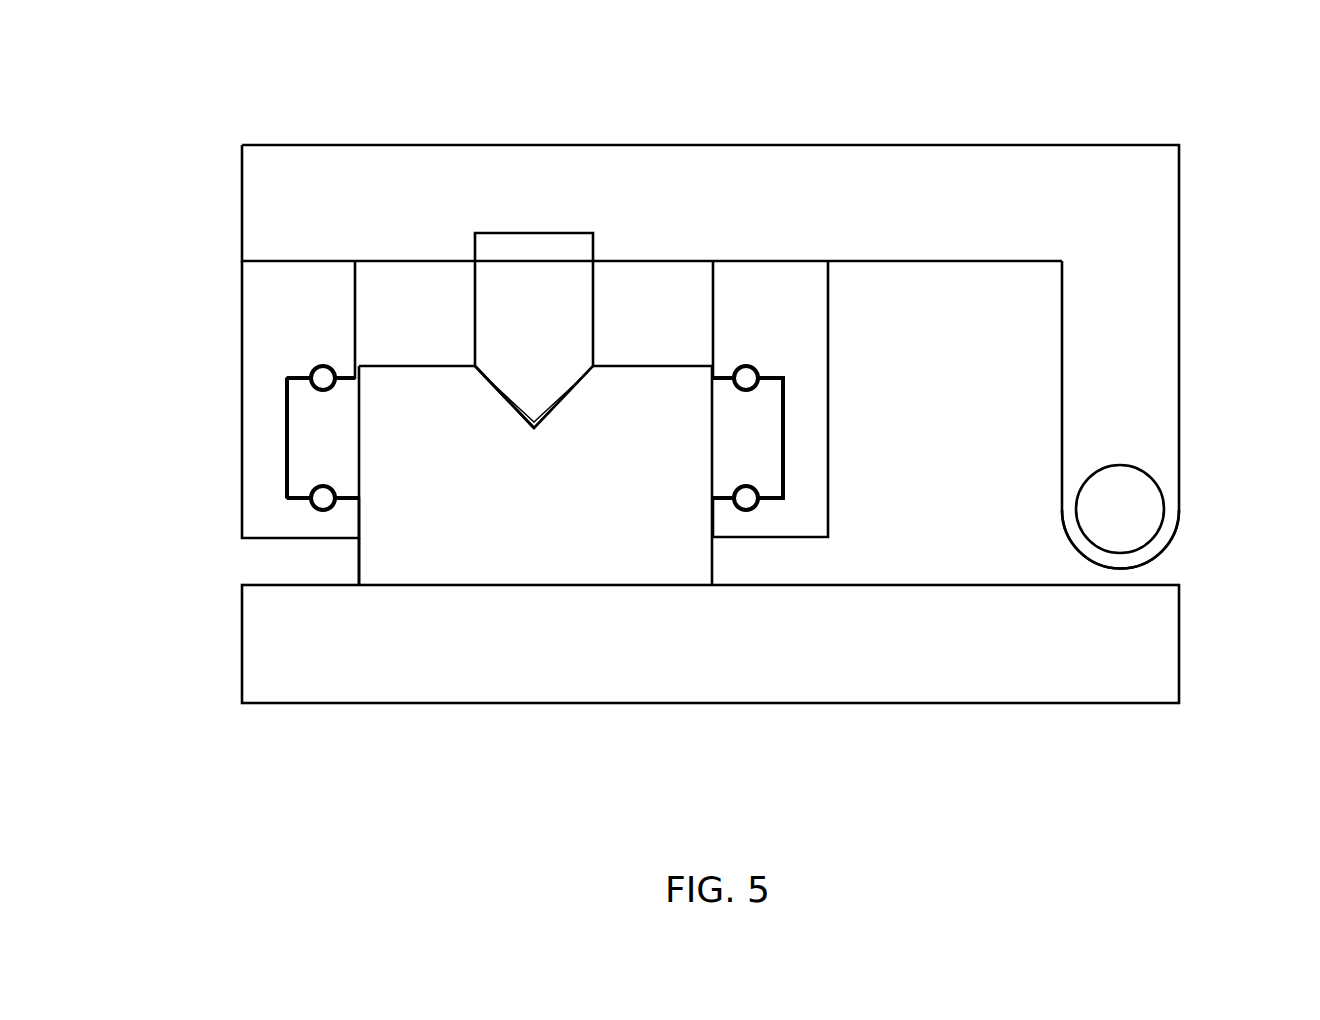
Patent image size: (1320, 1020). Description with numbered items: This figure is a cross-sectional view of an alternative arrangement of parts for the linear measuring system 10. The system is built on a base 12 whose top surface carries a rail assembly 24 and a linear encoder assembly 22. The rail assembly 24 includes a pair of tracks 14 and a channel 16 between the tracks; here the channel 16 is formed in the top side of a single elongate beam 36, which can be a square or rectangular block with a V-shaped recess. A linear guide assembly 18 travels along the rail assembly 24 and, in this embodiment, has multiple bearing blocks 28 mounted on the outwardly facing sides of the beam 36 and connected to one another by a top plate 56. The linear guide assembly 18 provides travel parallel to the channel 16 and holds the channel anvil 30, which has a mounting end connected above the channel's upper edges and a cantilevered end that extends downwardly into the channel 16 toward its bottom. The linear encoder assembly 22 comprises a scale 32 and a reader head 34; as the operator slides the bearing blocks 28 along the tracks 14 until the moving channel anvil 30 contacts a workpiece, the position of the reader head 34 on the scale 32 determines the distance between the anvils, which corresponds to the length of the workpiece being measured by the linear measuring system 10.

The linear measuring system 10 is at (187, 72).
The base 12 is at (383, 685).
The tracks 14 is at (310, 475).
The channel 16 is at (483, 389).
The linear guide assembly 18 is at (213, 230).
The linear encoder assembly 22 is at (1195, 373).
The rail assembly 24 is at (347, 560).
The bearing block 28 is at (287, 330).
The channel anvil 30 is at (537, 273).
The scale 32 is at (1139, 508).
The reader head 34 is at (1162, 553).
The elongate beam 36 is at (535, 538).
The top plate 56 is at (788, 162).